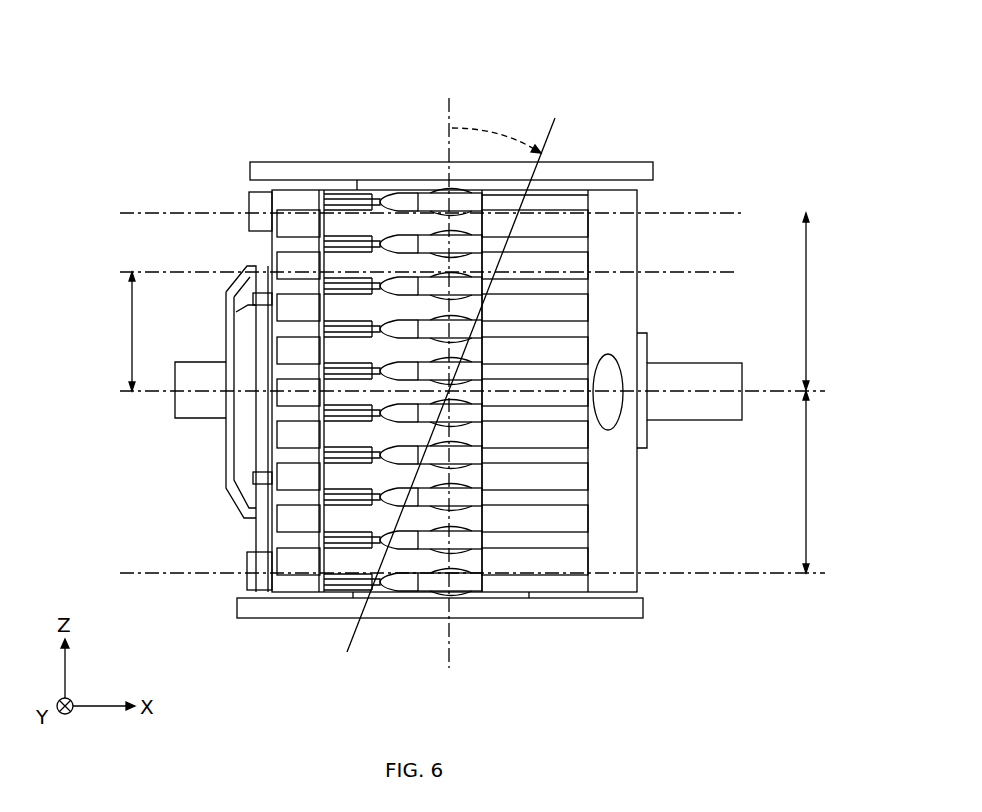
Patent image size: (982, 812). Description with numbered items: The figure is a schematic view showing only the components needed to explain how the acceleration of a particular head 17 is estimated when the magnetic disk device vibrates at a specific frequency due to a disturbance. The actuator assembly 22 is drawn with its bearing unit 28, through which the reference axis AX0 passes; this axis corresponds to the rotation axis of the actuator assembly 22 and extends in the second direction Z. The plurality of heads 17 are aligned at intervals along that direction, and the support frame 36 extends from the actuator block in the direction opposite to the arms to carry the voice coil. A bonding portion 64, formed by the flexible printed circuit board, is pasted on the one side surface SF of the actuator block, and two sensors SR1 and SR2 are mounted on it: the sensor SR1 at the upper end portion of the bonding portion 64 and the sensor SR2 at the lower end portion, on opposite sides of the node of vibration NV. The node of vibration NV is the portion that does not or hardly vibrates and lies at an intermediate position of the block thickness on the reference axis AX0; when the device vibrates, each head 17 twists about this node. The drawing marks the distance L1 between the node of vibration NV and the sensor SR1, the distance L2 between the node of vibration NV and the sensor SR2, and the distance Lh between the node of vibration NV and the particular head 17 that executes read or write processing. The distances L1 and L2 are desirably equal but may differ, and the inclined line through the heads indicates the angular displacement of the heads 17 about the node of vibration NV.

The head 17 is at (688, 232).
The actuator assembly 22 is at (715, 95).
The bearing unit 28 is at (418, 109).
The support frame 36 is at (175, 400).
The bonding portion 64 is at (251, 535).
The sensor SR1 is at (249, 207).
The sensor SR2 is at (248, 580).
The one side surface SF is at (244, 247).
The node of vibration NV is at (424, 393).
The reference axis AX0 is at (452, 118).
The distance Lh is at (119, 331).
The distance L1 is at (820, 301).
The distance L2 is at (820, 482).